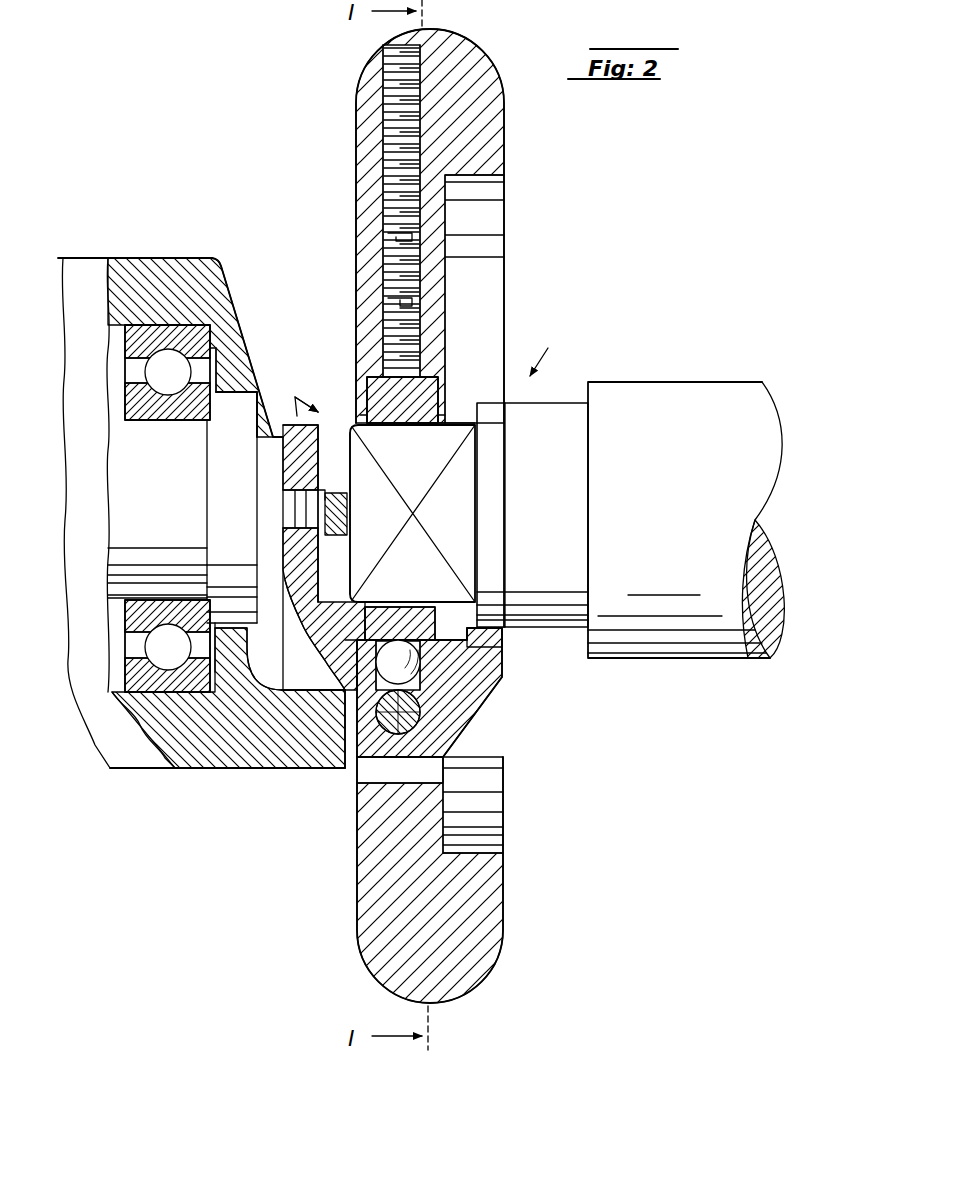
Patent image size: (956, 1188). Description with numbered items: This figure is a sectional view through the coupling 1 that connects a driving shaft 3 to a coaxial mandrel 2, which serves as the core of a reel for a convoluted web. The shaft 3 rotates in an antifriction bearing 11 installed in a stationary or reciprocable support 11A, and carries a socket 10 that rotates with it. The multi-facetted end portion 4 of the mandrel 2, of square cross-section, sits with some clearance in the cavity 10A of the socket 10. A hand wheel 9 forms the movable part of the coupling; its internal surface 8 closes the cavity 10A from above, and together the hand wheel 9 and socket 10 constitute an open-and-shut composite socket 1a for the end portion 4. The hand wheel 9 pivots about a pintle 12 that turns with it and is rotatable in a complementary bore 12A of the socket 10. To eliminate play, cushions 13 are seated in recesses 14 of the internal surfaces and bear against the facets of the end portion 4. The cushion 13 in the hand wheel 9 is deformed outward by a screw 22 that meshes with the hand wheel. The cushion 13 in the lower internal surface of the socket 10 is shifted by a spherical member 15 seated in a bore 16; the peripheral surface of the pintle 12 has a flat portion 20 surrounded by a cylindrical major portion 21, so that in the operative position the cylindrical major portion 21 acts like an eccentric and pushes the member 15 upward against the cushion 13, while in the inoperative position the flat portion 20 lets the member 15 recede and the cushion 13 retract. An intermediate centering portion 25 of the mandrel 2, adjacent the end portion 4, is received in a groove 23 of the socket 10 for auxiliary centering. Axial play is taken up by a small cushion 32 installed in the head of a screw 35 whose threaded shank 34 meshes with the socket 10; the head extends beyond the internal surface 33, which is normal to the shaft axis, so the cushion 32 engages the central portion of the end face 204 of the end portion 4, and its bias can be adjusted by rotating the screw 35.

The coupling 1 is at (546, 349).
The composite socket 1a is at (298, 392).
The mandrel 2 is at (662, 630).
The driving shaft 3 is at (128, 560).
The multi-facetted end portion 4 is at (412, 513).
The internal surface 8 is at (426, 428).
The hand wheel 9 is at (360, 112).
The socket 10 is at (306, 695).
The cavity 10A is at (456, 596).
The antifriction bearing 11 is at (162, 700).
The support 11A is at (176, 272).
The pintle 12 is at (412, 725).
The bore 12A is at (367, 772).
The cushion 13 is at (366, 402).
The recess 14 is at (355, 637).
The spherical shifting member 15 is at (378, 661).
The bore 16 is at (347, 712).
The flat portion 20 is at (420, 702).
The cylindrical major portion 21 is at (420, 664).
The screw 22 is at (410, 306).
The groove 23 is at (503, 650).
The intermediate centering portion 25 is at (488, 574).
The cushion 32 is at (349, 507).
The internal surface 33 is at (320, 556).
The shank 34 is at (300, 492).
The screw 35 is at (330, 490).
The end face 204 is at (290, 565).